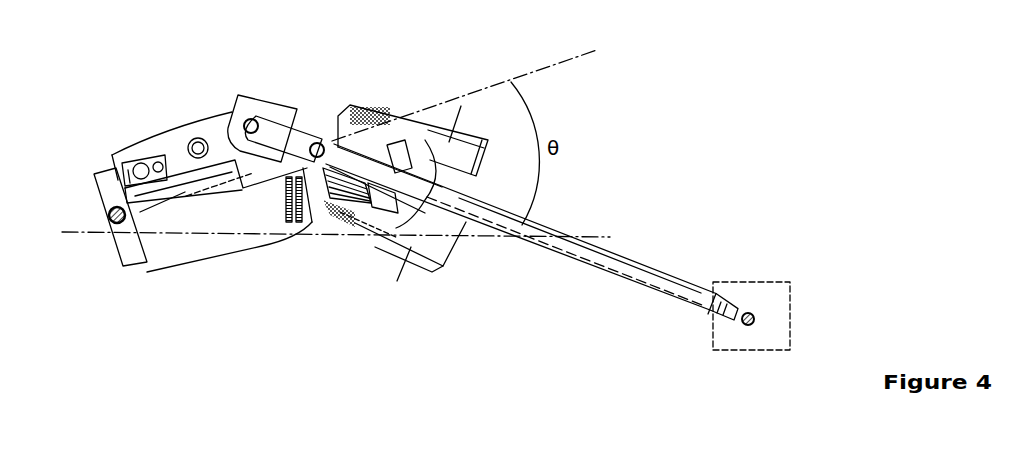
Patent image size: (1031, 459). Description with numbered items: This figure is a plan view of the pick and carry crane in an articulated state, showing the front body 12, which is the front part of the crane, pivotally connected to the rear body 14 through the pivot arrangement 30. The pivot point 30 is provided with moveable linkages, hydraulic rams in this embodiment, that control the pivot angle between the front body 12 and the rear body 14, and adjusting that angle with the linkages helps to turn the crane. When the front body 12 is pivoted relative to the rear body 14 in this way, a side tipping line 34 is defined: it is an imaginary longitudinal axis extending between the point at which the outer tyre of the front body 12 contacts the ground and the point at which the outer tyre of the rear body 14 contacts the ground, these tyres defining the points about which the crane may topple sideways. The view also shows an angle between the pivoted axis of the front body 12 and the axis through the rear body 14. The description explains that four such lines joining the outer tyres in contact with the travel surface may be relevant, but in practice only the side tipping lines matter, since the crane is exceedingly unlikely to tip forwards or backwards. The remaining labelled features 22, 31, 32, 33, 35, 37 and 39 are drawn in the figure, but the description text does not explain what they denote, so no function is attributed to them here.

The front body 12 is at (449, 283).
The rear body 14 is at (197, 112).
The bracket 22 is at (238, 103).
The pivot arrangement 30 is at (317, 163).
The slot 31 is at (194, 202).
The handle region 32 is at (764, 362).
The clamp 33 is at (138, 262).
The side tipping line 34 is at (313, 242).
The pin 35 is at (122, 227).
The pin 37 is at (251, 116).
The pin 39 is at (755, 308).